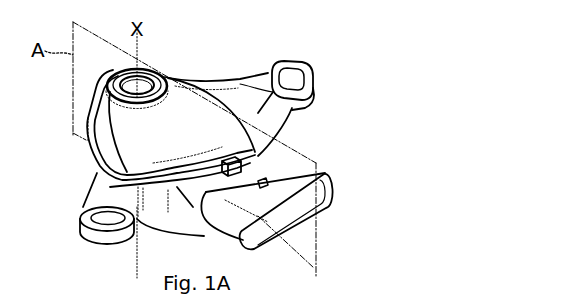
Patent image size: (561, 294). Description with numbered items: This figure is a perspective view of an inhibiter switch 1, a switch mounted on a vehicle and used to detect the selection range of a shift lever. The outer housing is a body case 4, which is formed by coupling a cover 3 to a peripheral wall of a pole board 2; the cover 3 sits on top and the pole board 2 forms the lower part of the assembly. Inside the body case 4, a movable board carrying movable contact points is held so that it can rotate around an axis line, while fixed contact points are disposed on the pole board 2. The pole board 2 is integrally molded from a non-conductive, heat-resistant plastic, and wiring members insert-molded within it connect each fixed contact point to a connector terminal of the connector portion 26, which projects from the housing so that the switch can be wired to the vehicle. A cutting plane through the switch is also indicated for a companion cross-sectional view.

The inhibiter switch 1 is at (333, 92).
The pole board 2 is at (104, 175).
The cover 3 is at (96, 150).
The body case 4 is at (45, 146).
The connector portion 26 is at (265, 180).